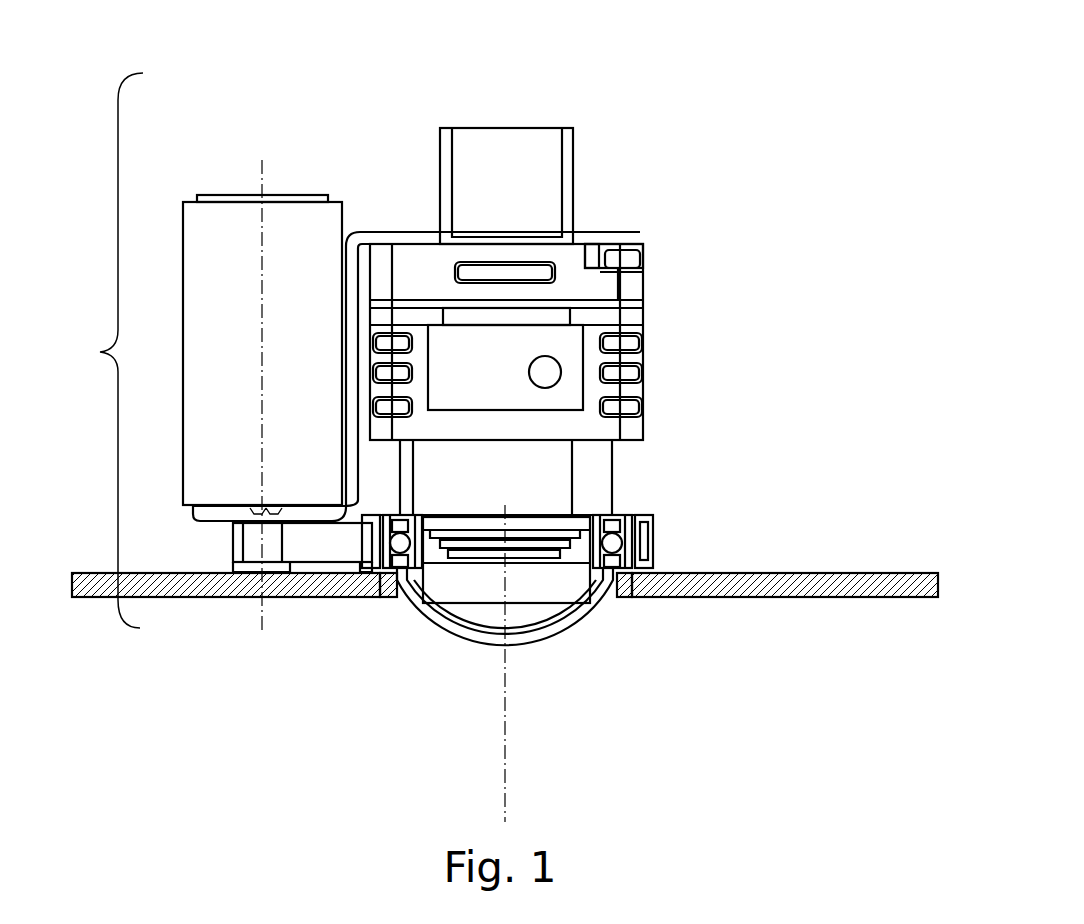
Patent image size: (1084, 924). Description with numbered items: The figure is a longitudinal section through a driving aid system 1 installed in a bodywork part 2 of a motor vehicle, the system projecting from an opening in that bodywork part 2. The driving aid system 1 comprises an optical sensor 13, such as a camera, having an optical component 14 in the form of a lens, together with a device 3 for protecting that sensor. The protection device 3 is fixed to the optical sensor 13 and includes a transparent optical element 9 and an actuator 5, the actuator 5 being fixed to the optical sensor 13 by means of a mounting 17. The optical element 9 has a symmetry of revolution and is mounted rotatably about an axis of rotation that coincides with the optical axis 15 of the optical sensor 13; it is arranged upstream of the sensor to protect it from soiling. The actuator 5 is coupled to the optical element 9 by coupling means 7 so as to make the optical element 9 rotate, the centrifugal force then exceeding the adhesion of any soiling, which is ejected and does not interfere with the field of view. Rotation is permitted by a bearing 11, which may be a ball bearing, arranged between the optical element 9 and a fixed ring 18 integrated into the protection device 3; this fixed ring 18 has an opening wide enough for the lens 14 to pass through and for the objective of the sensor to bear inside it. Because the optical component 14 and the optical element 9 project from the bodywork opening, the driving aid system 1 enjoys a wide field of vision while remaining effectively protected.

The driving aid system 1 is at (727, 110).
The bodywork part 2 is at (840, 597).
The protection device 3 is at (102, 350).
The actuator 5 is at (218, 212).
The coupling means 7 is at (333, 545).
The optical element 9 is at (573, 632).
The bearing 11 is at (395, 580).
The optical sensor 13 is at (514, 148).
The optical component 14 is at (475, 632).
The optical axis 15 is at (507, 735).
The mounting 17 is at (397, 237).
The fixed ring 18 is at (398, 532).